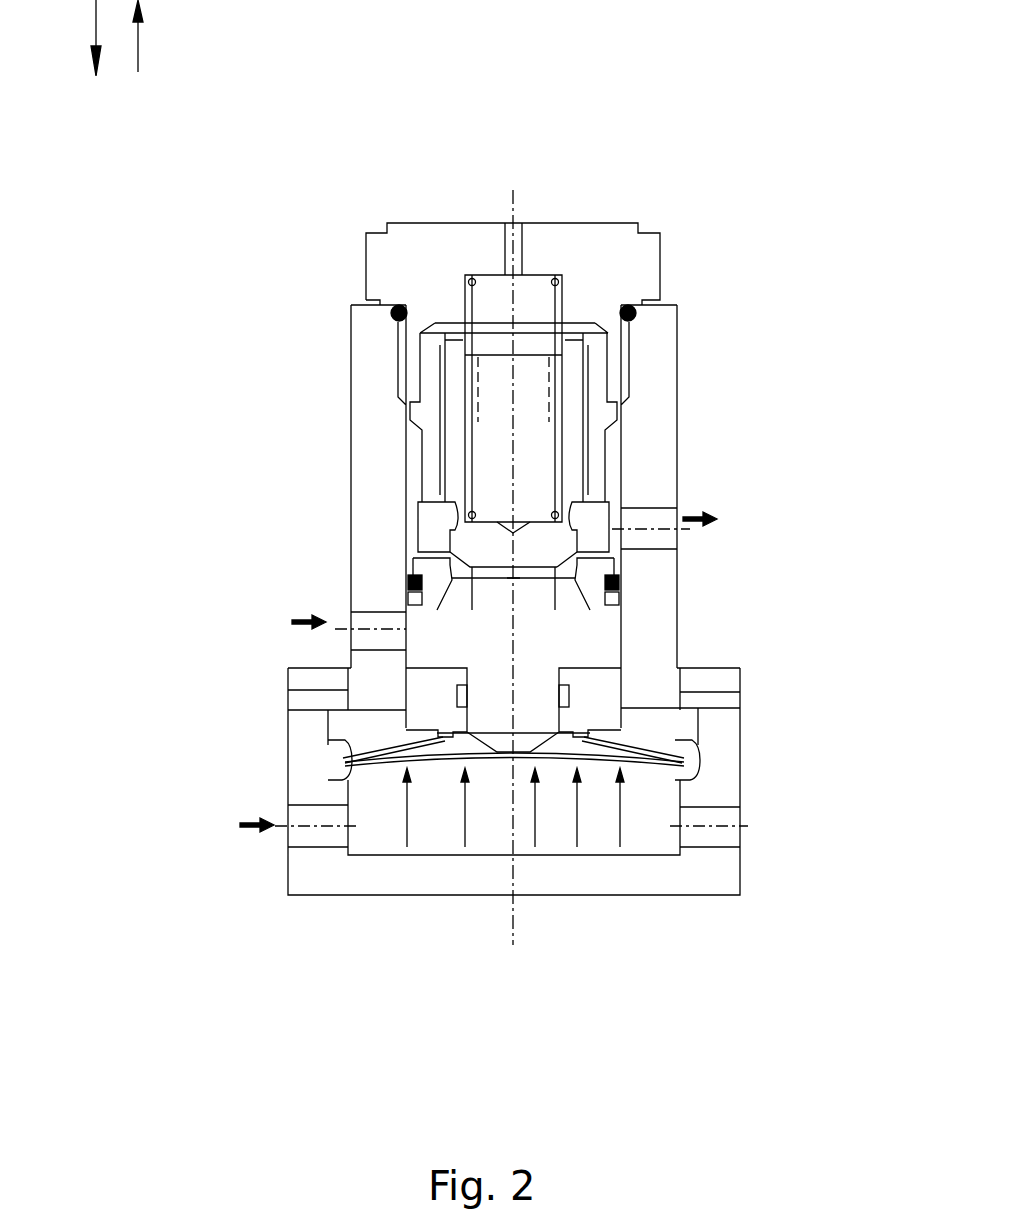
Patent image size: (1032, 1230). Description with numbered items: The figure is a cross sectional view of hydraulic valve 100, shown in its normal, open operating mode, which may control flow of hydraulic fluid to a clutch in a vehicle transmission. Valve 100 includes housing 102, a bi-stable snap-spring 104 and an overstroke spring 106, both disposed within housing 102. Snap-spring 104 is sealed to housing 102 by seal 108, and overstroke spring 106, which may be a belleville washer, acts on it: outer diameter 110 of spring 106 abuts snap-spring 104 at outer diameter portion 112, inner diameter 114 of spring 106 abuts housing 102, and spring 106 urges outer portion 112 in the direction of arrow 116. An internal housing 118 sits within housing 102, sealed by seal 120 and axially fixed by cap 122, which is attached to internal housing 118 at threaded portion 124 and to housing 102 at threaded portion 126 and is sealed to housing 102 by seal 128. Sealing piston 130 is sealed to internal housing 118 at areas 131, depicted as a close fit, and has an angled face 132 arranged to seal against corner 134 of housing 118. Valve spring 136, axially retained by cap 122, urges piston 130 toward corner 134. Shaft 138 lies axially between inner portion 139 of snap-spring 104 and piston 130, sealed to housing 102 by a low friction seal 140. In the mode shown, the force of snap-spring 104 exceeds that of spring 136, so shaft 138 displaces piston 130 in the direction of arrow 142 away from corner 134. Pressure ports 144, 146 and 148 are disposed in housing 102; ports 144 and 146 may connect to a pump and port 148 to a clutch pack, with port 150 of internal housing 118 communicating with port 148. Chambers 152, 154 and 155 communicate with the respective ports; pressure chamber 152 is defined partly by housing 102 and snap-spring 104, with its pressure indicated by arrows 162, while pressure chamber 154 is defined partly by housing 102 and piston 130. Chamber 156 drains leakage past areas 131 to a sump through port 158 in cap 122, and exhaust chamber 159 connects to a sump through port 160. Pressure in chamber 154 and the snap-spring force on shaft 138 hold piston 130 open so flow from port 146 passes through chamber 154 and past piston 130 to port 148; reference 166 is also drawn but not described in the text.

The hydraulic valve 100 is at (163, 312).
The housing 102 is at (303, 783).
The snap-spring 104 is at (377, 762).
The overstroke spring 106 is at (437, 733).
The seal 108 is at (350, 752).
The outer diameter 110 is at (353, 757).
The outer diameter portion 112 is at (333, 774).
The inner diameter 114 is at (365, 610).
The arrow 116 is at (95, 24).
The internal housing 118 is at (433, 452).
The seal 120 is at (408, 580).
The cap 122 is at (445, 243).
The threaded portion 124 is at (418, 378).
The threaded portion 126 is at (392, 343).
The seal 128 is at (397, 306).
The sealing piston 130 is at (570, 397).
The areas 131 is at (588, 397).
The angled face 132 is at (453, 540).
The corner 134 is at (440, 562).
The valve spring 136 is at (558, 275).
The shaft 138 is at (518, 689).
The inner portion 139 is at (500, 768).
The seal 140 is at (570, 687).
The arrow 142 is at (138, 30).
The pressure port 144 is at (335, 828).
The pressure port 146 is at (408, 597).
The pressure port 148 is at (662, 507).
The port 150 is at (590, 537).
The pressure chamber 152 is at (447, 829).
The pressure chamber 154 is at (456, 653).
The chamber 155 is at (608, 571).
The chamber 156 is at (548, 454).
The port 158 is at (505, 238).
The exhaust chamber 159 is at (672, 739).
The port 160 is at (735, 700).
The arrows 162 is at (578, 817).
The return spring 166 is at (590, 460).